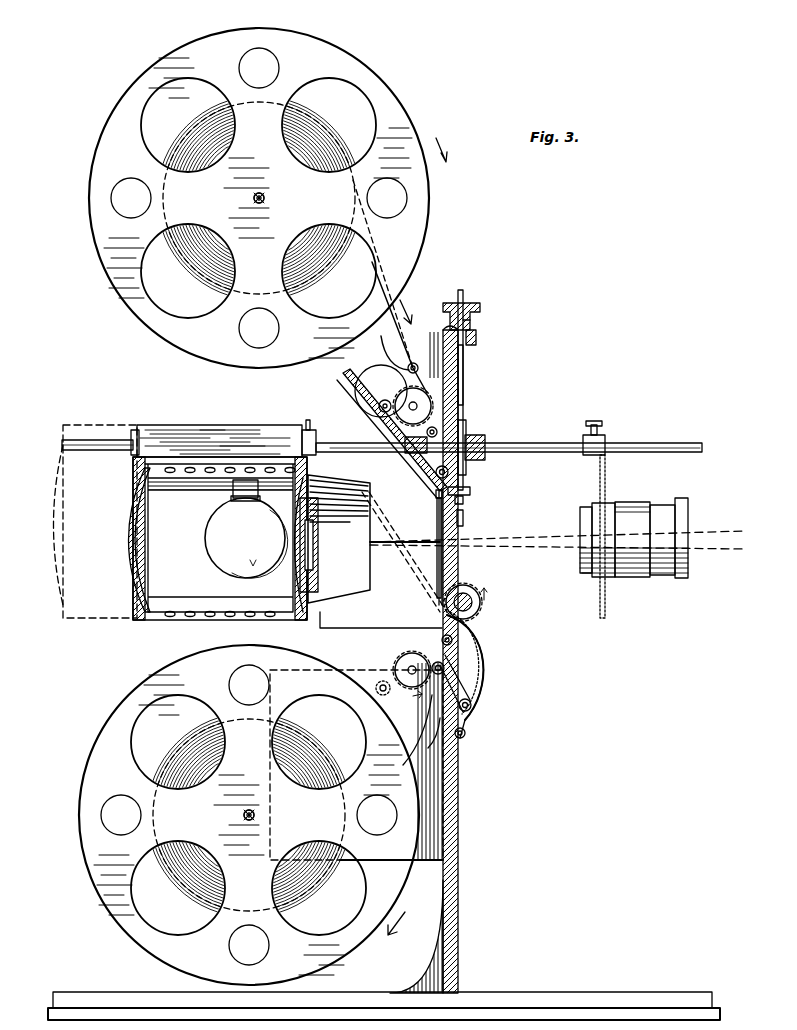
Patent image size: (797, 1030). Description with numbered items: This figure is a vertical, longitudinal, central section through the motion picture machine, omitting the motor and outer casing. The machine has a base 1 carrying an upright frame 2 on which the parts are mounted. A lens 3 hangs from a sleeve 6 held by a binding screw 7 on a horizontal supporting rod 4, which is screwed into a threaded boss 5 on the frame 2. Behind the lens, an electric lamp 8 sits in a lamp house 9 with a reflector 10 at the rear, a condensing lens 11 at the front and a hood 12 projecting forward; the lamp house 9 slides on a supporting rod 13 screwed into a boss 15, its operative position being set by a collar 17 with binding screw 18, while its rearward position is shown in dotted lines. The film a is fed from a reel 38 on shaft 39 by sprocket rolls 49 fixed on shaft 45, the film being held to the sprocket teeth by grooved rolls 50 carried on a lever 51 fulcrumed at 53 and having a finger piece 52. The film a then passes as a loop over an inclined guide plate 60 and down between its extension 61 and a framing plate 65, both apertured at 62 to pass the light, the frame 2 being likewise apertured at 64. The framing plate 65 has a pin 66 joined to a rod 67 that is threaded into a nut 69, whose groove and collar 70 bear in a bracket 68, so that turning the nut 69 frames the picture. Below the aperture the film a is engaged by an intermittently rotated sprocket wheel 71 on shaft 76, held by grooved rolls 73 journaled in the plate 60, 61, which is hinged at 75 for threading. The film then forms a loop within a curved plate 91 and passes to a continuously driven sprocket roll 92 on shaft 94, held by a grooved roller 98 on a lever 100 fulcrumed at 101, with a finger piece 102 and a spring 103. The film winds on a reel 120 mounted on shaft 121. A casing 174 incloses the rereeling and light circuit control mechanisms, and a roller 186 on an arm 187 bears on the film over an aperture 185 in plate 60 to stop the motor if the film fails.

The base 1 is at (548, 1000).
The upright frame 2 is at (458, 856).
The lens 3 is at (645, 578).
The supporting rod 4 is at (640, 445).
The threaded boss 5 is at (478, 436).
The sleeve 6 is at (583, 450).
The binding screw 7 is at (594, 422).
The electric lamp 8 is at (218, 552).
The lamp house 9 is at (182, 598).
The reflector 10 is at (132, 560).
The condensing lens 11 is at (318, 566).
The hood 12 is at (358, 590).
The supporting rod 13 is at (92, 438).
The boss 15 is at (436, 472).
The collar 17 is at (270, 436).
The binding screw 18 is at (311, 429).
The reel 38 is at (112, 298).
The shaft 39 is at (252, 197).
The shaft 45 is at (418, 406).
The sprocket rolls 49 is at (427, 393).
The grooved rolls 50 is at (383, 400).
The lever 51 is at (400, 366).
The finger piece 52 is at (382, 340).
The fulcrum 53 is at (404, 351).
The apron or inclined guide plate 60 is at (382, 415).
The extension of plate 61 is at (436, 494).
The aperture 62 is at (437, 515).
The aperture 64 is at (463, 524).
The apertured plate 65 is at (464, 500).
The pin 66 is at (462, 488).
The rod 67 is at (465, 360).
The bracket 68 is at (478, 336).
The nut 69 is at (478, 304).
The groove and collar 70 is at (472, 320).
The sprocket wheel 71 is at (474, 590).
The grooved rolls 73 is at (425, 592).
The hinge 75 is at (440, 640).
The shaft 76 is at (470, 612).
The curved plate 91 is at (482, 662).
The sprocket roll 92 is at (398, 662).
The shaft 94 is at (411, 675).
The grooved roller 98 is at (437, 676).
The lever 100 is at (472, 706).
The fulcrum 101 is at (471, 710).
The finger piece 102 is at (462, 736).
The spring 103 is at (466, 728).
The reel 120 is at (120, 926).
The shaft 121 is at (243, 814).
The casing 174 is at (322, 628).
The aperture 185 is at (408, 452).
The roller 186 is at (431, 450).
The arm 187 is at (468, 430).
The film a is at (430, 702).